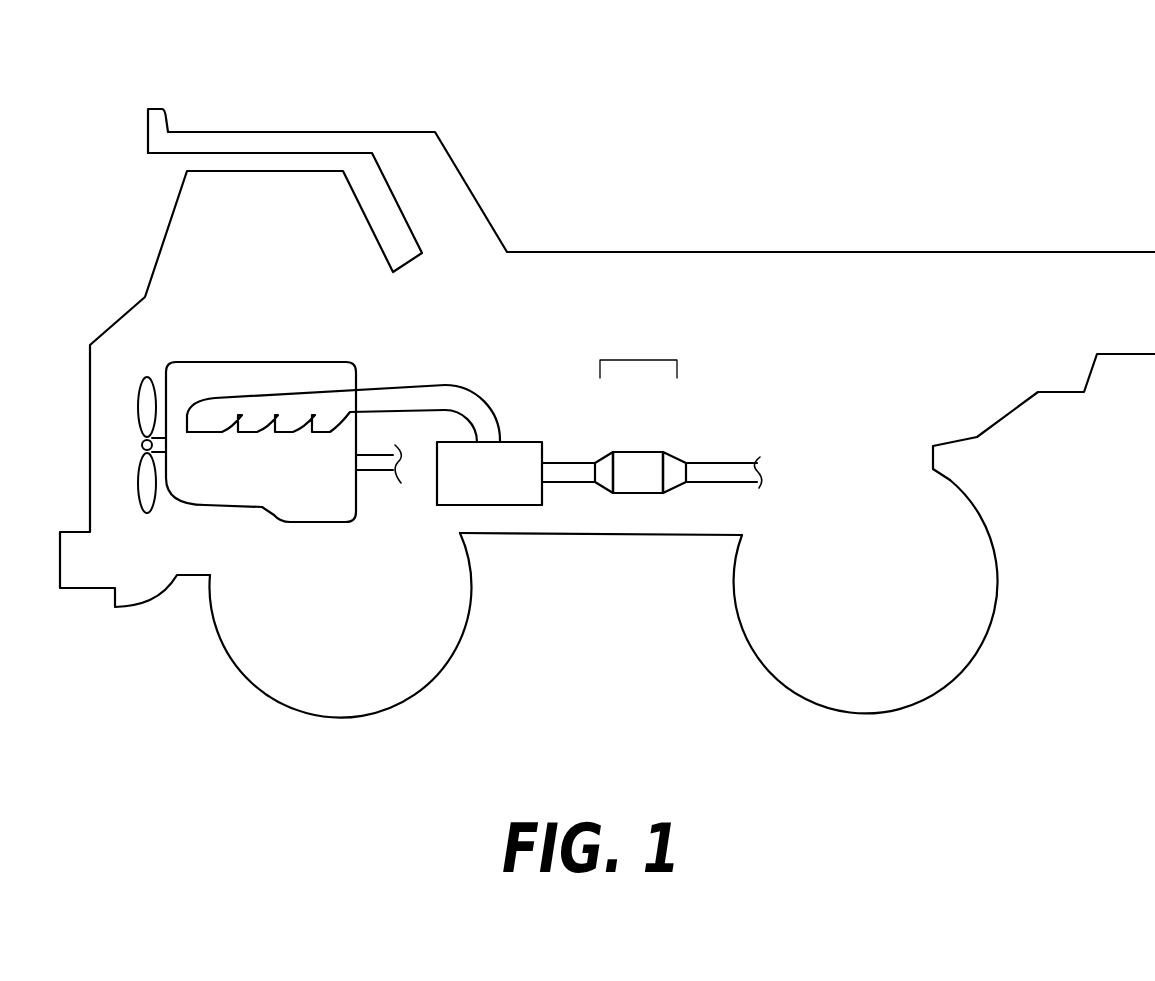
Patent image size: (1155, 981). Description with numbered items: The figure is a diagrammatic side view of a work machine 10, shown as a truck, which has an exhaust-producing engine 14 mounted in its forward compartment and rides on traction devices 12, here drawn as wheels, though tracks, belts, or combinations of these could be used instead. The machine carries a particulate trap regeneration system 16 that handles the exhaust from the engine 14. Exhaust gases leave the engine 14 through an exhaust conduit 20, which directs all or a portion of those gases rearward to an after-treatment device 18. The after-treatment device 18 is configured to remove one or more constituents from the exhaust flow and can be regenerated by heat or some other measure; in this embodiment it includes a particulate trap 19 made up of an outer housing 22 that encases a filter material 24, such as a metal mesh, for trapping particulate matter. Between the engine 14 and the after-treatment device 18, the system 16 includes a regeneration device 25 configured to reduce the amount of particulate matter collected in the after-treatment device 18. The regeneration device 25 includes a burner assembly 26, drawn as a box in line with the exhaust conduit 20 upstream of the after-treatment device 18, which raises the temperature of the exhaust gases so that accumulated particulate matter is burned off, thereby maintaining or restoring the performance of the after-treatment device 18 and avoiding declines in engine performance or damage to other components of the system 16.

The work machine 10 is at (632, 134).
The traction devices 12 is at (412, 680).
The engine 14 is at (297, 535).
The particulate trap regeneration system 16 is at (427, 328).
The after-treatment device 18 is at (652, 360).
The particulate trap 19 is at (623, 414).
The exhaust conduit 20 is at (442, 385).
The outer housing 22 is at (642, 493).
The filter material 24 is at (642, 457).
The regeneration device 25 is at (427, 530).
The burner assembly 26 is at (489, 473).